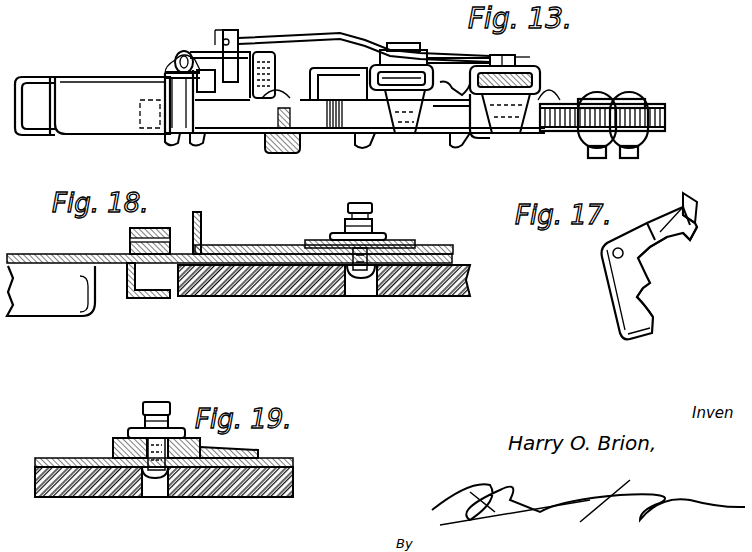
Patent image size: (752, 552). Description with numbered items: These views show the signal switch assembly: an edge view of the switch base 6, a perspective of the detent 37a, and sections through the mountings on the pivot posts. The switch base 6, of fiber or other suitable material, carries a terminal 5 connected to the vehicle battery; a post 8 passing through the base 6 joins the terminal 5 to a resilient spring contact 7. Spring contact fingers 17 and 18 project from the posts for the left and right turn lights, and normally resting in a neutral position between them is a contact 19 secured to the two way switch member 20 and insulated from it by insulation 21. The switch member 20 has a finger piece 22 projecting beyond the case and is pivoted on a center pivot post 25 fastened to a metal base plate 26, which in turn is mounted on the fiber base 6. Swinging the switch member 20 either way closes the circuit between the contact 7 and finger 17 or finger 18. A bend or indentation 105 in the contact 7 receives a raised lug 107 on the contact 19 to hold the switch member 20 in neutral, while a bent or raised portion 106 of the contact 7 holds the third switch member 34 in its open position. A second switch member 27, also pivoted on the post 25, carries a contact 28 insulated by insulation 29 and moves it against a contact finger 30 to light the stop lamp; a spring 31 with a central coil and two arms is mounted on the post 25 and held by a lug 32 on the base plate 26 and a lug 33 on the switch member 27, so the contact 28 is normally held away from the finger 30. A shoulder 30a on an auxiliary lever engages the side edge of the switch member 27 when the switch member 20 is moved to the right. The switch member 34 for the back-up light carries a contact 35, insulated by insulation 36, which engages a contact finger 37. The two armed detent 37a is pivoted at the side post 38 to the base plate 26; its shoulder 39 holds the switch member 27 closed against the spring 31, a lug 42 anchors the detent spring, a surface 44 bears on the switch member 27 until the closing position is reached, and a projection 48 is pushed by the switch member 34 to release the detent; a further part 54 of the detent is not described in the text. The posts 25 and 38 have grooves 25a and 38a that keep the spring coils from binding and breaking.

In FIG. 13, the terminal 5 is at (300, 140).
In FIG. 13, the switch base 6 is at (665, 110).
In FIG. 18, the switch base 6 is at (440, 298).
In FIG. 19, the switch base 6 is at (80, 487).
In FIG. 13, the contact 7 is at (262, 52).
In FIG. 13, the post 8 is at (290, 153).
In FIG. 13, the spring contact finger 17 is at (166, 140).
In FIG. 13, the spring contact finger 18 is at (198, 142).
In FIG. 13, the contact 19 is at (178, 105).
In FIG. 18, the contact 19 is at (133, 300).
In FIG. 13, the switch member 20 is at (167, 80).
In FIG. 18, the switch member 20 is at (90, 313).
In FIG. 13, the insulation 21 is at (170, 72).
In FIG. 13, the finger piece 22 is at (41, 76).
In FIG. 18, the center pivot post 25 is at (373, 206).
In FIG. 18, the groove 25a is at (345, 222).
In FIG. 18, the base plate 26 is at (452, 262).
In FIG. 19, the base plate 26 is at (295, 466).
In FIG. 13, the switch member 27 is at (412, 78).
In FIG. 13, the contact 28 is at (410, 112).
In FIG. 13, the insulation 29 is at (382, 68).
In FIG. 13, the contact finger 30 is at (358, 134).
In FIG. 18, the shoulder 30a is at (453, 255).
In FIG. 13, the spring 31 is at (311, 37).
In FIG. 13, the lug 32 is at (516, 60).
In FIG. 13, the lug 33 is at (229, 32).
In FIG. 18, the lug 33 is at (201, 218).
In FIG. 13, the switch member 34 is at (532, 82).
In FIG. 13, the contact 35 is at (502, 112).
In FIG. 13, the insulation 36 is at (480, 72).
In FIG. 13, the contact finger 37 is at (456, 135).
In FIG. 17, the two armed detent 37a is at (665, 222).
In FIG. 19, the two armed detent 37a is at (237, 455).
In FIG. 19, the pivot post 38 is at (160, 401).
In FIG. 19, the groove 38a is at (143, 420).
In FIG. 17, the shoulder 39 is at (650, 336).
In FIG. 17, the lug 42 is at (697, 206).
In FIG. 17, the surface 44 is at (650, 299).
In FIG. 17, the projection 48 is at (652, 273).
In FIG. 17, the tab 54 is at (700, 232).
In FIG. 13, the bend or indentation 105 is at (180, 52).
In FIG. 18, the bend or indentation 105 is at (130, 230).
In FIG. 13, the bent or raised portion 106 is at (470, 136).
In FIG. 13, the raised lug 107 is at (182, 58).
In FIG. 18, the raised lug 107 is at (155, 238).